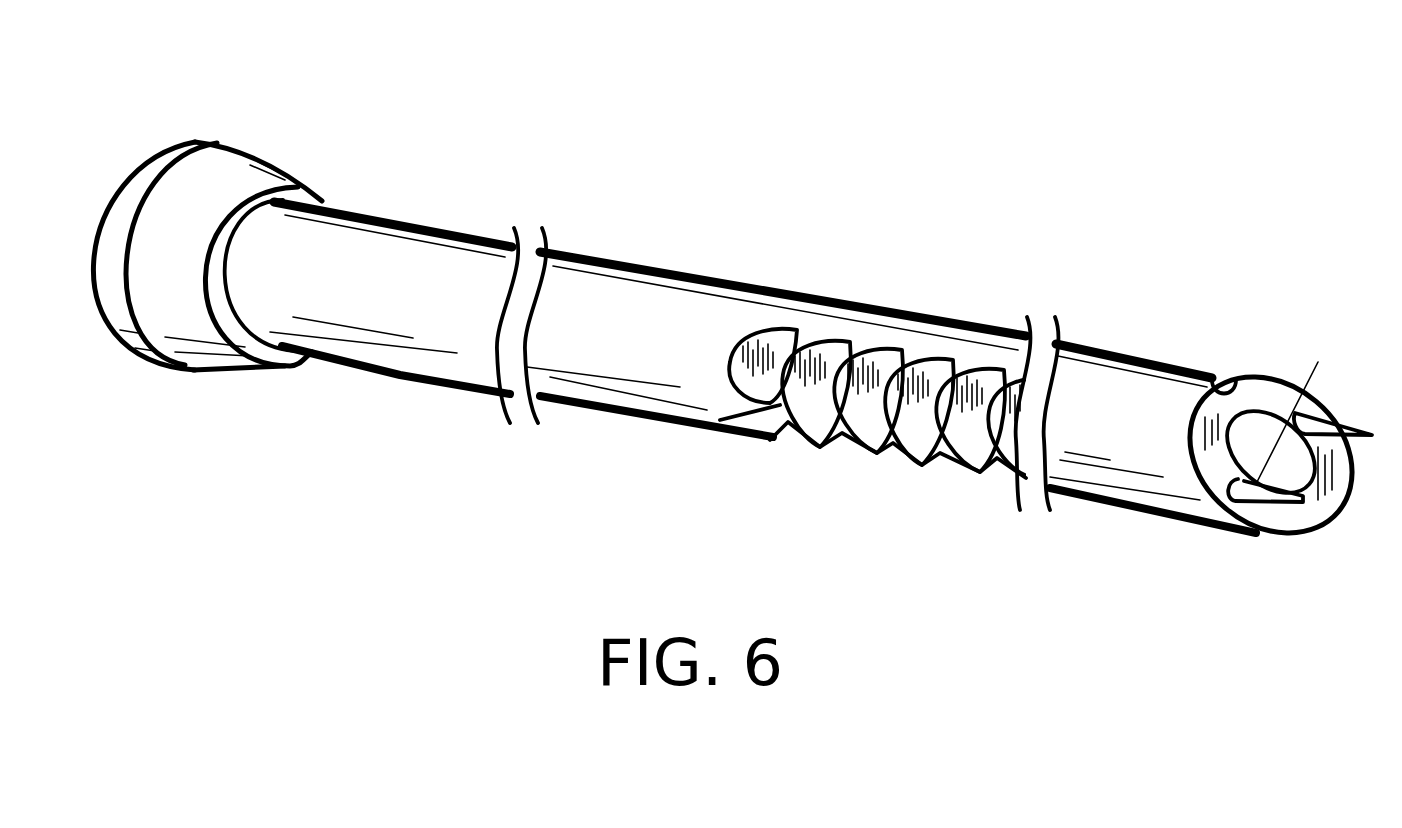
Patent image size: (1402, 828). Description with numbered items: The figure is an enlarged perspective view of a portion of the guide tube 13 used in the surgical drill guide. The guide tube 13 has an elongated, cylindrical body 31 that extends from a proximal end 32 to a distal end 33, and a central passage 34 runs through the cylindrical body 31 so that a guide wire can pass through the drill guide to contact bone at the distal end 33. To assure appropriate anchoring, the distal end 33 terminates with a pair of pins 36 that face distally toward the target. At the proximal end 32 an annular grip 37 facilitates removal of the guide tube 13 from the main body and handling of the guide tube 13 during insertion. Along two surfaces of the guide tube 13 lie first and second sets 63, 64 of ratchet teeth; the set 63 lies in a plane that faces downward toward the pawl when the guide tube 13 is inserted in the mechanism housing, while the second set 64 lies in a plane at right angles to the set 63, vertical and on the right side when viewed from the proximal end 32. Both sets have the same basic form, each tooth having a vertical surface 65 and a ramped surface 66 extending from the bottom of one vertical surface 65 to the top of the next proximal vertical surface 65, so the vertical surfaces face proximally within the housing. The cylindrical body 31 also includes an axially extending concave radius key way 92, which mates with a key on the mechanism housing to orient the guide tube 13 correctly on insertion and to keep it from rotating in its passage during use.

The guide tube 13 is at (1053, 283).
The cylindrical body 31 is at (1100, 383).
The proximal end 32 is at (313, 205).
The distal end 33 is at (1248, 377).
The central passage 34 is at (1318, 482).
The pins 36 is at (1296, 412).
The annular grip 37 is at (247, 168).
The first set of ratchet teeth 63 is at (821, 448).
The second set of ratchet teeth 64 is at (833, 372).
The vertical surface 65 is at (722, 432).
The ramped surface 66 is at (890, 455).
The key way 92 is at (1197, 375).